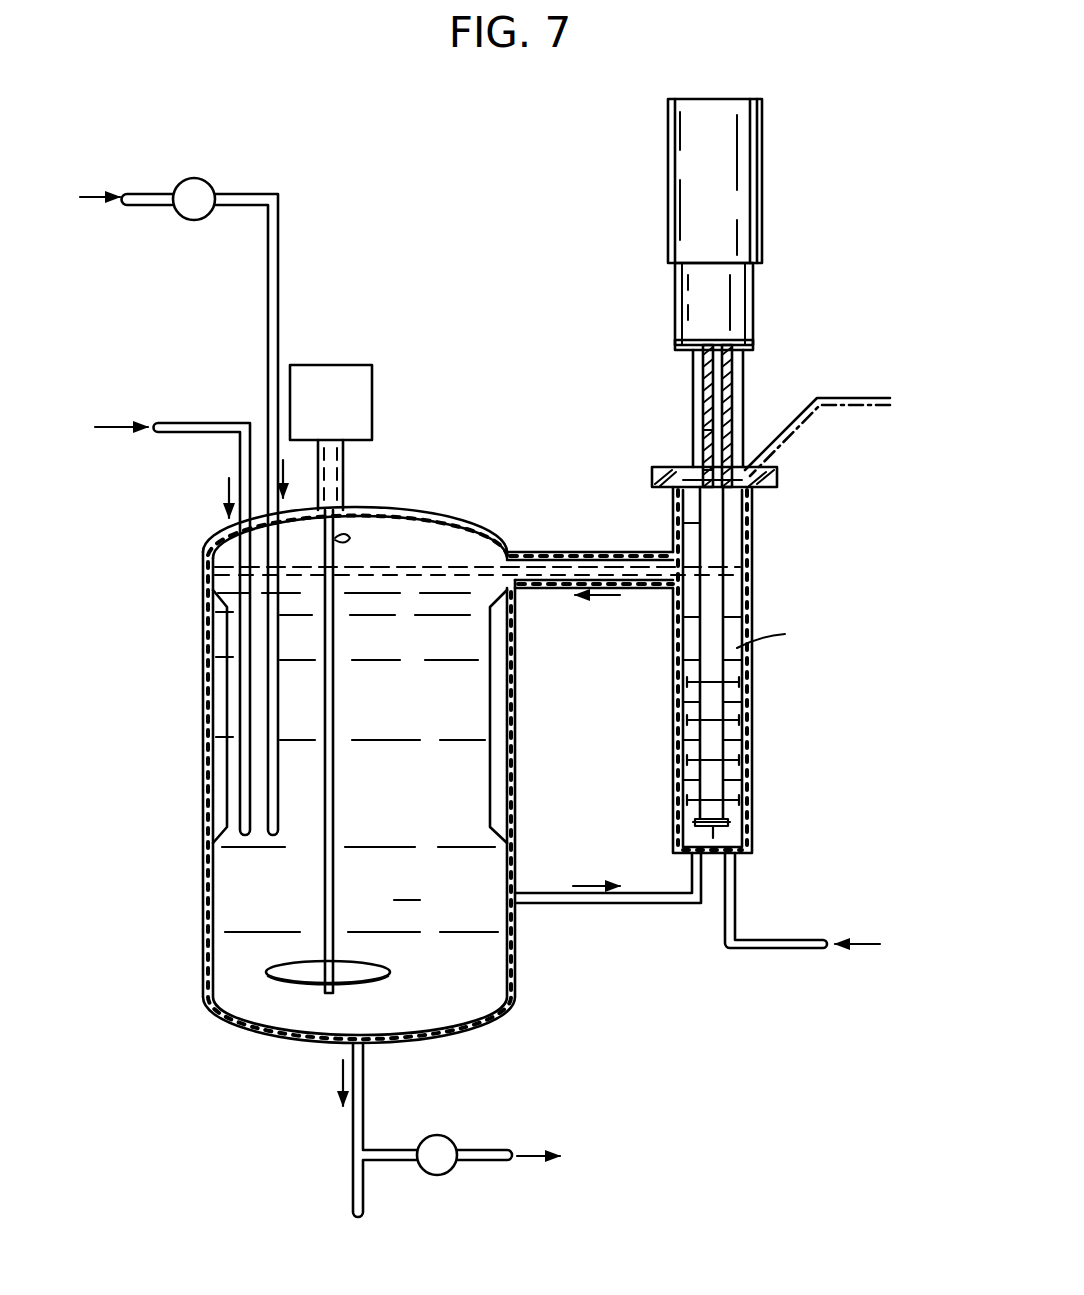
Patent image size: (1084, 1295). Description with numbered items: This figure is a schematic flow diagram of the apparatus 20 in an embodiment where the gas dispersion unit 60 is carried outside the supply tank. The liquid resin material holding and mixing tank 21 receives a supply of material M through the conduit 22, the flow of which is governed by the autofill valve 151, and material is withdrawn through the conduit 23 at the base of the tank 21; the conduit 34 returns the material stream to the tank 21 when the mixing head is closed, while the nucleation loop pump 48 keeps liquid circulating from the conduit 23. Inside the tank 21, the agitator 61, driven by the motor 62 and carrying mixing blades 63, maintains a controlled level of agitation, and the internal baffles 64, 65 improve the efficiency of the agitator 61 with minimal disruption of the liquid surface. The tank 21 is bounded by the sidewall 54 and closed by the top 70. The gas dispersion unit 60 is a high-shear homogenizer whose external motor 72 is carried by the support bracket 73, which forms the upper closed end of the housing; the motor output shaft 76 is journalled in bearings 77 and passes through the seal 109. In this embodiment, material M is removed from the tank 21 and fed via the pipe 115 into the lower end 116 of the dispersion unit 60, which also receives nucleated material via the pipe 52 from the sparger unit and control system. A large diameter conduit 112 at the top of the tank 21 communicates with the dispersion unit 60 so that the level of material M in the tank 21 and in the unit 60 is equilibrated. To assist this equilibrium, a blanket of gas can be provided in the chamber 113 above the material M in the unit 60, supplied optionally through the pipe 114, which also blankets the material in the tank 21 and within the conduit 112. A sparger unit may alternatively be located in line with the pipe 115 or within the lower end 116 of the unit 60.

The apparatus 20 is at (383, 168).
The liquid resin material holding and mixing tank 21 is at (198, 968).
The conduit 22 is at (268, 273).
The conduit 23 is at (363, 1085).
The conduit 34 is at (208, 427).
The nucleation loop pump 48 is at (445, 1138).
The supply pipe 52 is at (775, 950).
The tank sidewall 54 is at (515, 807).
The gas dispersion unit 60 is at (620, 430).
The agitator 61 is at (333, 820).
The motor 62 is at (360, 405).
The mixing blades 63 is at (290, 978).
The internal baffle 64 is at (222, 705).
The internal baffle 65 is at (508, 705).
The top of mixing tank 70 is at (405, 507).
The external motor 72 is at (745, 195).
The support bracket 73 is at (770, 480).
The output shaft 76 is at (718, 372).
The bearings 77 is at (730, 392).
The seal 109 is at (700, 447).
The large diameter conduit 112 is at (585, 550).
The chamber 113 is at (735, 537).
The pipe 114 is at (850, 398).
The pipe 115 is at (613, 905).
The lower end of dispersion unit 116 is at (752, 845).
The autofill valve 151 is at (205, 180).